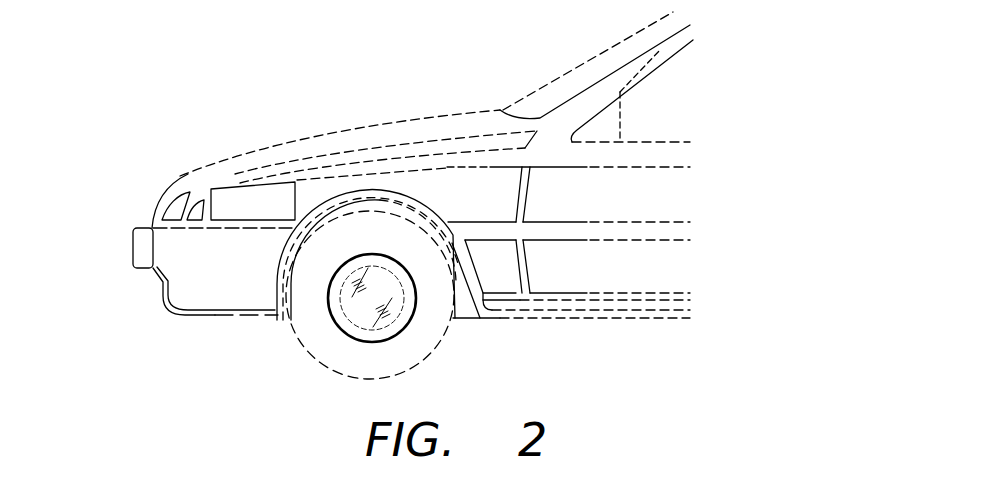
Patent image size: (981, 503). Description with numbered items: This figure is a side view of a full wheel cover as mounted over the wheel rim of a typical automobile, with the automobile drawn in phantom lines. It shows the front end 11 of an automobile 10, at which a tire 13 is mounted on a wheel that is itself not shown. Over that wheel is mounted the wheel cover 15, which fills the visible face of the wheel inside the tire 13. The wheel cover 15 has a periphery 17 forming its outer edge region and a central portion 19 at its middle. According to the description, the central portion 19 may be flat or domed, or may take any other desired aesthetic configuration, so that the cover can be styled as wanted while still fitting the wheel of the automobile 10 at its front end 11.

The automobile 10 is at (284, 101).
The front end 11 is at (152, 317).
The tire 13 is at (408, 350).
The wheel cover 15 is at (364, 311).
The periphery 17 is at (372, 254).
The central portion 19 is at (348, 287).